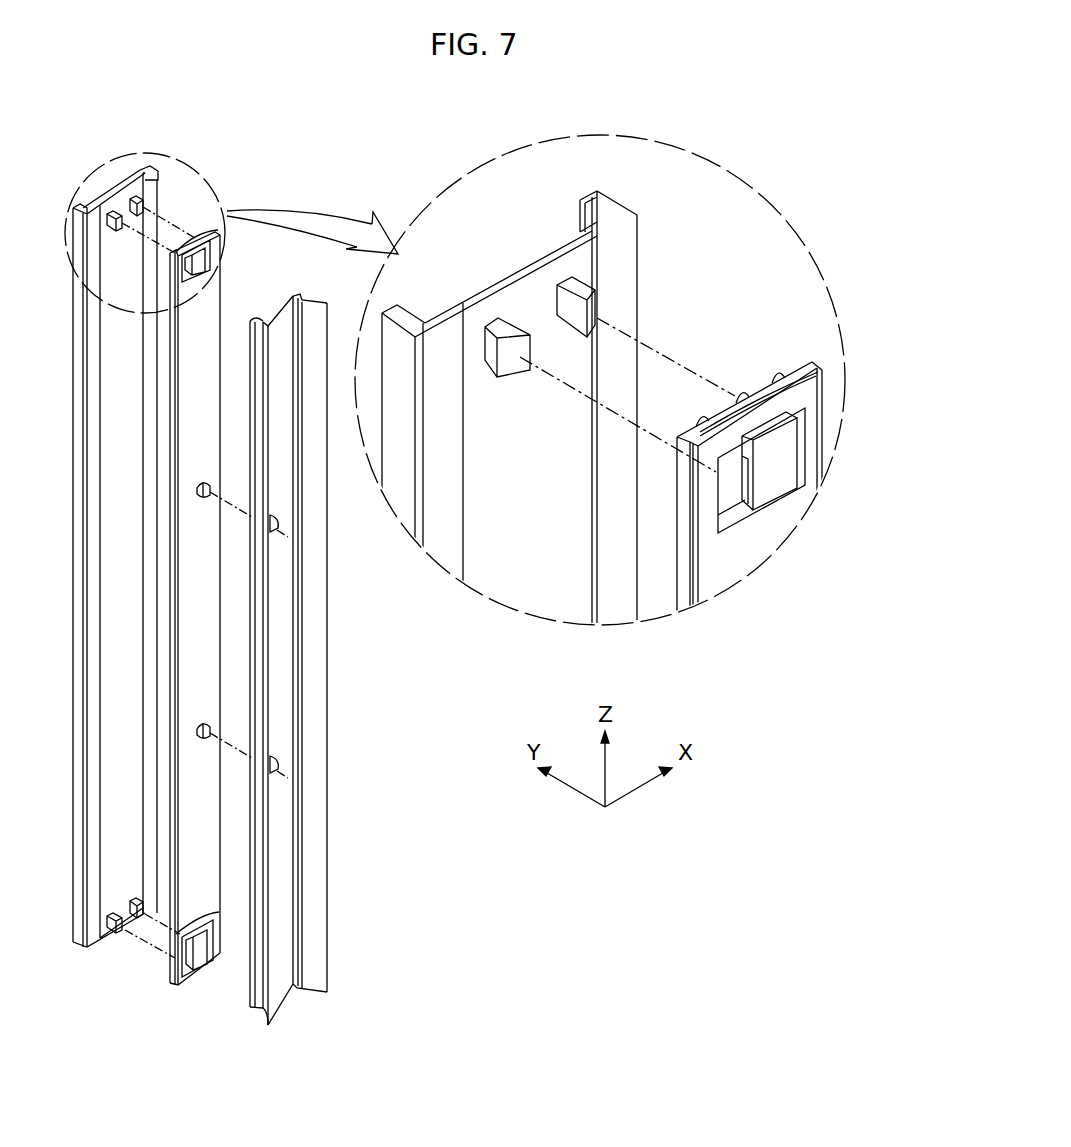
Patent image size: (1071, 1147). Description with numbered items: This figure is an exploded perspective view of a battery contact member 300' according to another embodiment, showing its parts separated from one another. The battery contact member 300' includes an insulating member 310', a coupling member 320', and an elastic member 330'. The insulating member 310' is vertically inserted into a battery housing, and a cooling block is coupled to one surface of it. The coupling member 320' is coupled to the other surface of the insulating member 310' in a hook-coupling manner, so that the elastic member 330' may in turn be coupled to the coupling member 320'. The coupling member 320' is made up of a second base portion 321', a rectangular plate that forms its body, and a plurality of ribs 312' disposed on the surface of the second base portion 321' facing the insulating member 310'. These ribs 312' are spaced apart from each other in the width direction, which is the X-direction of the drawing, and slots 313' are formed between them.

The battery contact member 300' is at (455, 369).
The insulating member 310' is at (404, 531).
The ribs 312' is at (822, 484).
The slots 313' is at (775, 324).
The coupling member 320' is at (450, 646).
The second base portion 321' is at (805, 406).
The elastic member 330' is at (333, 659).